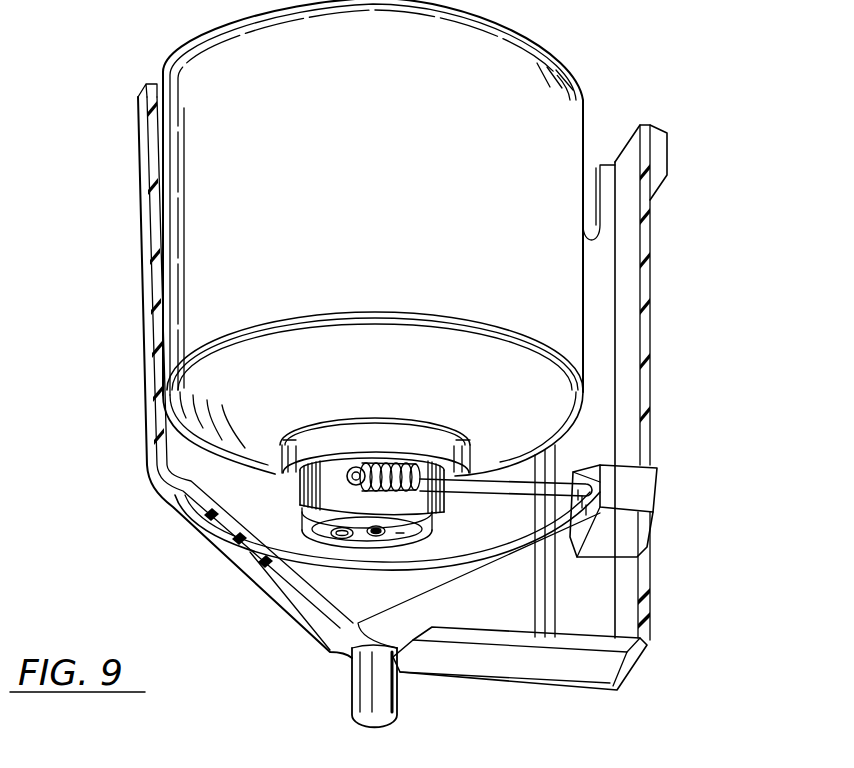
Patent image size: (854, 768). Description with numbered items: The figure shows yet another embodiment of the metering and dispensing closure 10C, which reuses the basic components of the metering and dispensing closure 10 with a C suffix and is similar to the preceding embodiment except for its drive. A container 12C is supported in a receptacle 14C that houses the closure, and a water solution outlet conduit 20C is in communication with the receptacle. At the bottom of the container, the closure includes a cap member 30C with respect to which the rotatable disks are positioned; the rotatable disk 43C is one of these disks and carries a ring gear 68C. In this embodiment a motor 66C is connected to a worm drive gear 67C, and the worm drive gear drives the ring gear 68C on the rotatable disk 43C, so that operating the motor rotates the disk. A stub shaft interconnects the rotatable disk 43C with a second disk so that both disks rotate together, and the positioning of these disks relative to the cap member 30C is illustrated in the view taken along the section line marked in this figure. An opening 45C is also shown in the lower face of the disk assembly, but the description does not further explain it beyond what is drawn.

The container 12C is at (540, 63).
The receptacle 14C is at (150, 268).
The metering and dispensing closure 10C is at (268, 509).
The cap member 30C is at (282, 452).
The ring gear 68C is at (297, 496).
The rotatable disk 43C is at (303, 521).
The outlet orifice 45C is at (338, 538).
The worm drive gear 67C is at (383, 470).
The motor 66C is at (640, 492).
The water solution outlet conduit 20C is at (398, 703).
The metering and dispensing closure 10 is at (403, 437).